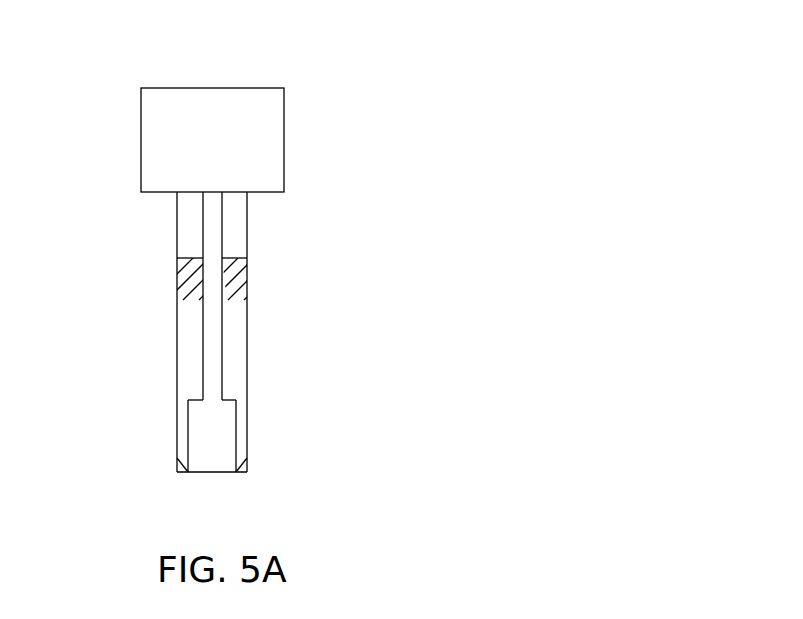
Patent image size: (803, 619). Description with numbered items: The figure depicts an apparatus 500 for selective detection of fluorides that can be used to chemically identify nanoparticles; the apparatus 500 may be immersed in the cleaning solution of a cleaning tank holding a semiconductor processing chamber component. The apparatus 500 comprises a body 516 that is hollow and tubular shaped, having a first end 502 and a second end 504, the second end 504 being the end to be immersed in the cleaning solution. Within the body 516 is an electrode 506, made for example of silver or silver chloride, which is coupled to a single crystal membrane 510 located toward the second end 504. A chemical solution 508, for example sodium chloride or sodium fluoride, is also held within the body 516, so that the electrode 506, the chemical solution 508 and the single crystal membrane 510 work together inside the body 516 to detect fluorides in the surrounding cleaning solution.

The apparatus 500 is at (405, 61).
The first end 502 is at (314, 213).
The second end 504 is at (265, 482).
The electrode 506 is at (215, 284).
The chemical solution 508 is at (238, 345).
The single crystal membrane 510 is at (178, 465).
The body 516 is at (138, 305).